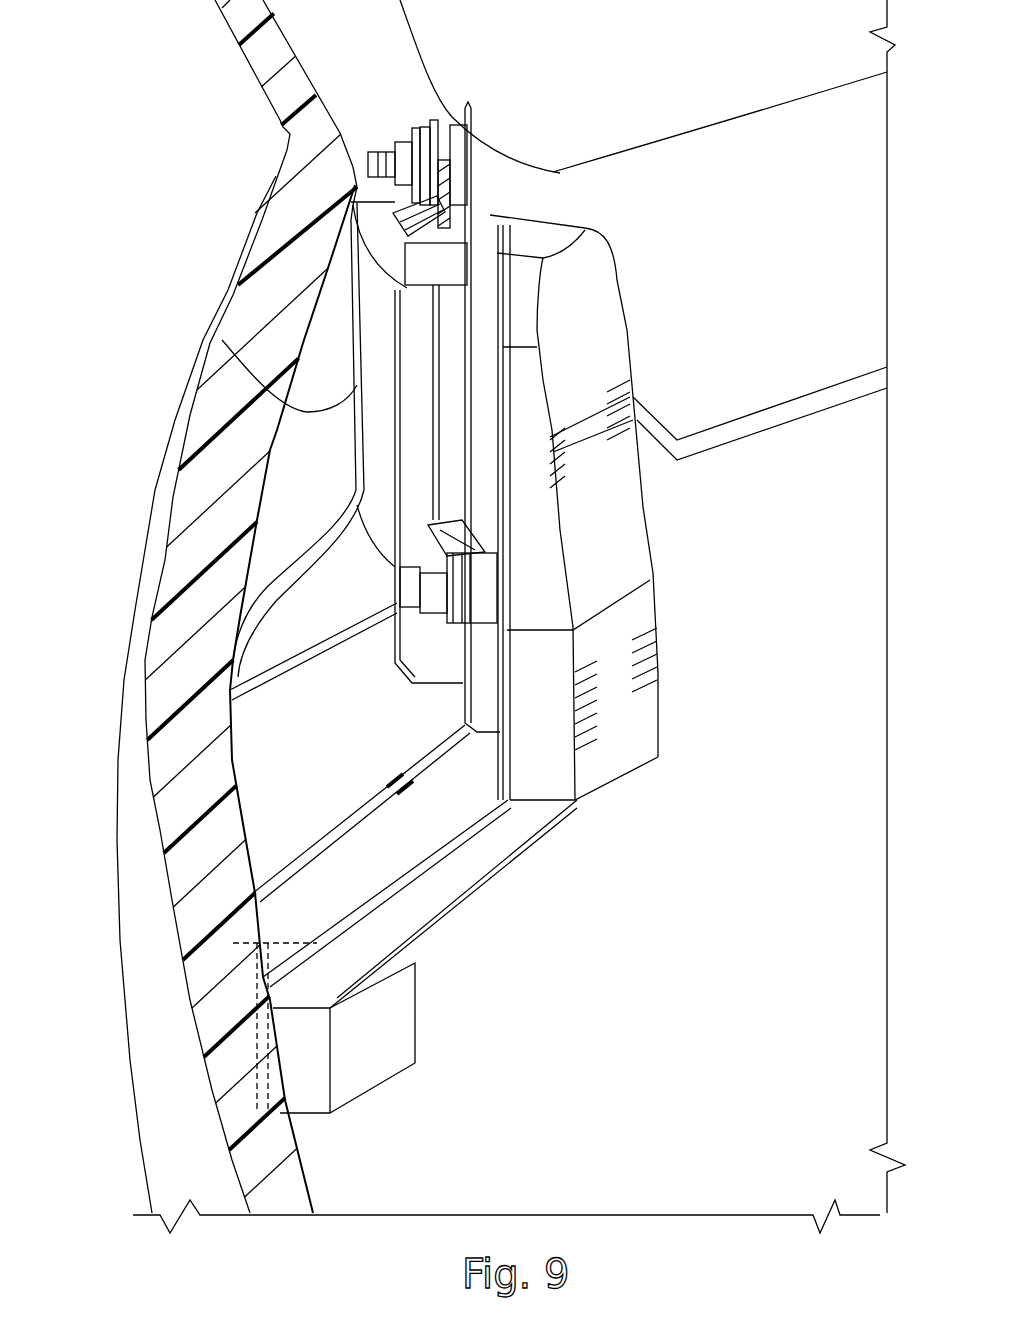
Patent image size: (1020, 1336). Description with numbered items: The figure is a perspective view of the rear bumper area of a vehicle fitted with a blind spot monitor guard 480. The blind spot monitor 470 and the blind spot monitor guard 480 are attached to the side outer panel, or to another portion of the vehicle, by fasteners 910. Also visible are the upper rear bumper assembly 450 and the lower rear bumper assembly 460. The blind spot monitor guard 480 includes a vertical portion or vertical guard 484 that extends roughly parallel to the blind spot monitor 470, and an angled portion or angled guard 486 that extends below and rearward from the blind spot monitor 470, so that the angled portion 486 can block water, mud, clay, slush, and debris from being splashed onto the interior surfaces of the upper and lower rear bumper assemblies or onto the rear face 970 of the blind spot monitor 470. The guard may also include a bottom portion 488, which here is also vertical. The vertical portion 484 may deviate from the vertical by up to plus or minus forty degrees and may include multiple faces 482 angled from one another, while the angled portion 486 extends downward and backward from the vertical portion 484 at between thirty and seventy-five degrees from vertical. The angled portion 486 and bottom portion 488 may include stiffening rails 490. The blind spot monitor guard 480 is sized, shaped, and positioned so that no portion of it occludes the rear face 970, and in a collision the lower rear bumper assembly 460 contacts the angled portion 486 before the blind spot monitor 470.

The upper rear bumper assembly 450 is at (270, 105).
The lower rear bumper assembly 460 is at (123, 1045).
The blind spot monitor 470 is at (212, 336).
The blind spot monitor guard 480 is at (722, 647).
The faces 482 is at (530, 235).
The vertical portion (vertical guard) 484 is at (607, 297).
The angled portion (angled guard) 486 is at (380, 775).
The bottom portion 488 is at (418, 1012).
The stiffening rails 490 is at (357, 850).
The fasteners 910 is at (400, 140).
The rear face 970 is at (367, 457).